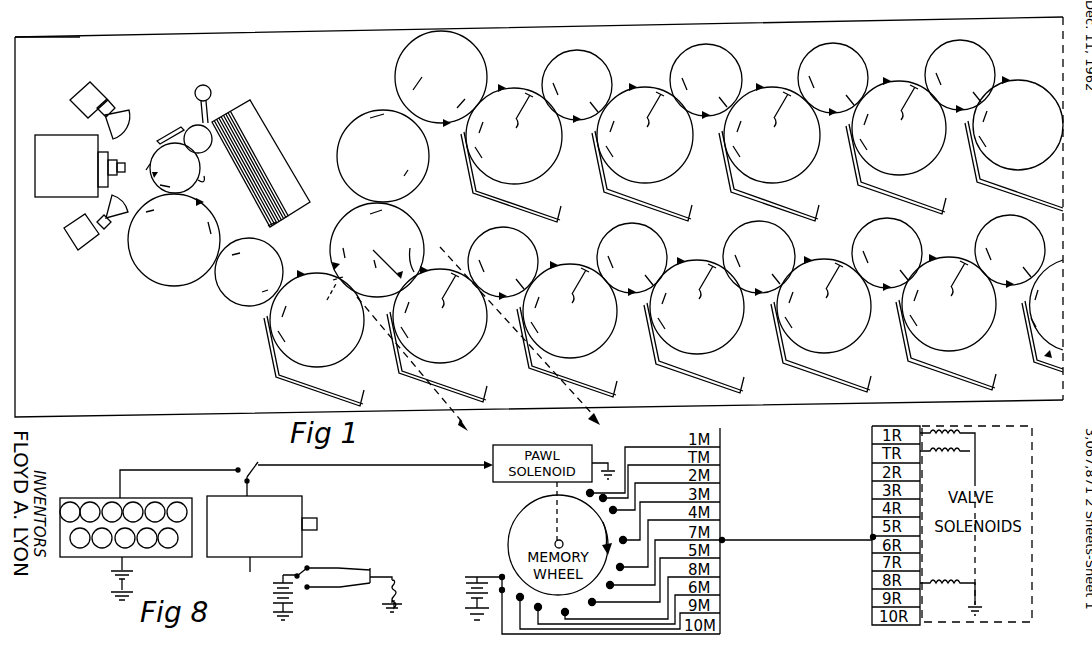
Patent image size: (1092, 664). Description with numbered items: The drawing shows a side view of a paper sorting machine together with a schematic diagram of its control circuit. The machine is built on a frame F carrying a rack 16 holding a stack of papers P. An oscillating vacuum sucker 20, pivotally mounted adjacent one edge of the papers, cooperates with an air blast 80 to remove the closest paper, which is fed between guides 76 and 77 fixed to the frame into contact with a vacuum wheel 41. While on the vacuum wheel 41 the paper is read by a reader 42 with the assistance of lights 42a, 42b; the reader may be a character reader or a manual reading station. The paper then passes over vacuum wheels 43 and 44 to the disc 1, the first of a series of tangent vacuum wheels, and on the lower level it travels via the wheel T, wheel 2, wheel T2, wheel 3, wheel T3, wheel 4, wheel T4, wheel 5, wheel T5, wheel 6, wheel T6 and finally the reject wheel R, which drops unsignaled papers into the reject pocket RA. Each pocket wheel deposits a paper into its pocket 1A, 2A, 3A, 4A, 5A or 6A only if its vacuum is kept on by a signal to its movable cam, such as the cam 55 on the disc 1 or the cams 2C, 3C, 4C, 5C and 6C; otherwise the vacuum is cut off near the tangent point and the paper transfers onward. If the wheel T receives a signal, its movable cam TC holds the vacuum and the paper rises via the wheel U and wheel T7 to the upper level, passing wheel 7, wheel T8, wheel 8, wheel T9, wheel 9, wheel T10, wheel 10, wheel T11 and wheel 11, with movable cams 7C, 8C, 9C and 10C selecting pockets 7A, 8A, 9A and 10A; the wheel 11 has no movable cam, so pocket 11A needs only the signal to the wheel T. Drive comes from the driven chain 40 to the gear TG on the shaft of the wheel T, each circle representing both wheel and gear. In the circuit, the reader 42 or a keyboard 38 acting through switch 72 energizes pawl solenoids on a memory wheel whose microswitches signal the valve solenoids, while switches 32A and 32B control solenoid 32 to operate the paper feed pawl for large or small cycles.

In FIG. 1, the frame F is at (66, 37).
In FIG. 1, the light 42a is at (108, 86).
In FIG. 1, the reader 42 is at (67, 197).
In FIG. 8, the reader 42 is at (283, 557).
In FIG. 1, the light 42b is at (99, 250).
In FIG. 1, the air blast 80 is at (209, 86).
In FIG. 1, the vacuum sucker 20 is at (194, 125).
In FIG. 1, the guide 77 is at (170, 132).
In FIG. 1, the guide 76 is at (166, 138).
In FIG. 1, the vacuum wheel 41 is at (198, 180).
In FIG. 1, the papers P is at (250, 164).
In FIG. 1, the rack 16 is at (253, 197).
In FIG. 1, the vacuum wheel 43 is at (146, 284).
In FIG. 1, the vacuum wheel 44 is at (272, 246).
In FIG. 1, the disc T is at (420, 243).
In FIG. 1, the gear TG is at (409, 219).
In FIG. 1, the movable cam TC is at (393, 262).
In FIG. 1, the wheel U is at (416, 182).
In FIG. 1, the movable cam 55 is at (336, 298).
In FIG. 1, the driven chain 40 is at (468, 422).
In FIG. 1, the disc 1 is at (343, 363).
In FIG. 1, the pocket 1A is at (350, 400).
In FIG. 1, the wheel 2 is at (472, 361).
In FIG. 1, the pocket 2A is at (477, 398).
In FIG. 1, the movable cam 2C is at (439, 290).
In FIG. 1, the wheel 3 is at (595, 358).
In FIG. 1, the pocket 3A is at (606, 395).
In FIG. 1, the movable cam 3C is at (569, 285).
In FIG. 1, the wheel 4 is at (725, 355).
In FIG. 1, the pocket 4A is at (732, 392).
In FIG. 1, the movable cam 4C is at (696, 281).
In FIG. 1, the wheel 5 is at (850, 353).
In FIG. 1, the pocket 5A is at (859, 387).
In FIG. 1, the movable cam 5C is at (823, 280).
In FIG. 1, the wheel 6 is at (977, 351).
In FIG. 1, the pocket 6A is at (984, 385).
In FIG. 1, the movable cam 6C is at (948, 278).
In FIG. 1, the disc 7 is at (545, 177).
In FIG. 1, the pocket 7A is at (549, 218).
In FIG. 1, the movable cam 7C is at (513, 110).
In FIG. 1, the disc 8 is at (674, 176).
In FIG. 1, the pocket 8A is at (685, 217).
In FIG. 1, the movable cam 8C is at (644, 109).
In FIG. 1, the wheel 9 is at (802, 175).
In FIG. 1, the pocket 9A is at (809, 213).
In FIG. 1, the movable cam 9C is at (771, 109).
In FIG. 1, the wheel 10 is at (928, 170).
In FIG. 1, the pocket 10A is at (932, 211).
In FIG. 1, the movable cam 10C is at (895, 102).
In FIG. 1, the wheel 11 is at (1030, 170).
In FIG. 1, the pocket 11A is at (1017, 166).
In FIG. 1, the wheel R is at (1032, 309).
In FIG. 1, the reject pocket RA is at (1056, 397).
In FIG. 1, the wheel T2 is at (535, 260).
In FIG. 1, the wheel T3 is at (662, 258).
In FIG. 1, the wheel T4 is at (792, 255).
In FIG. 1, the wheel T5 is at (927, 253).
In FIG. 1, the wheel T6 is at (1034, 233).
In FIG. 1, the wheel T7 is at (484, 66).
In FIG. 1, the disc T8 is at (600, 62).
In FIG. 1, the wheel T9 is at (727, 57).
In FIG. 1, the wheel T10 is at (858, 55).
In FIG. 1, the wheel T11 is at (985, 54).
In FIG. 8, the switch 72 is at (252, 468).
In FIG. 8, the keyboard 38 is at (140, 557).
In FIG. 8, the solenoid 32 is at (398, 584).
In FIG. 8, the switch 32A is at (342, 563).
In FIG. 8, the switch 32B is at (342, 590).